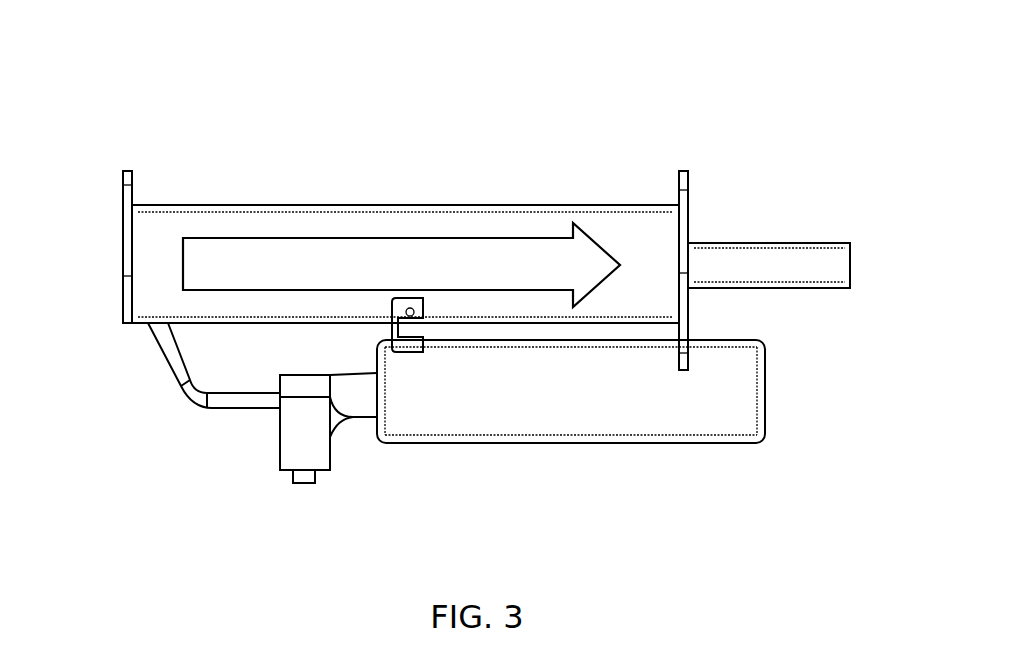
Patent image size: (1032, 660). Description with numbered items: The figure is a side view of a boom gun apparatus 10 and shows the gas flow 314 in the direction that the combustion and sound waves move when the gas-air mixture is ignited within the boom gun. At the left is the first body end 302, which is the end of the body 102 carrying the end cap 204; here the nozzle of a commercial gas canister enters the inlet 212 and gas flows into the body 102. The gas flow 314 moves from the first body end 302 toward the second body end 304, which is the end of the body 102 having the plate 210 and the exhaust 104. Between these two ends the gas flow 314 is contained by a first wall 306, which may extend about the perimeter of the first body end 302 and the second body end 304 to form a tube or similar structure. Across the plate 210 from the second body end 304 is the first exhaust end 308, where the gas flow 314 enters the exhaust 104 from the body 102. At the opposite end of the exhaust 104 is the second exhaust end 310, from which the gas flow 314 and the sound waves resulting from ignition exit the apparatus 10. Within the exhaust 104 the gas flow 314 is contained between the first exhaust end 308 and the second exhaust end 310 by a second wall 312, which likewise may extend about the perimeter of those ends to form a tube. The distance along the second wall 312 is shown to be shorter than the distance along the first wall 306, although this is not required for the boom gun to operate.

The apparatus 10 is at (182, 446).
The body 102 is at (207, 310).
The exhaust 104 is at (842, 289).
The end cap 204 is at (122, 252).
The plate 210 is at (684, 371).
The inlet 212 is at (141, 331).
The first body end 302 is at (142, 197).
The second body end 304 is at (667, 199).
The first wall 306 is at (472, 205).
The first exhaust end 308 is at (698, 231).
The second exhaust end 310 is at (845, 233).
The second wall 312 is at (793, 289).
The gas flow 314 is at (457, 276).